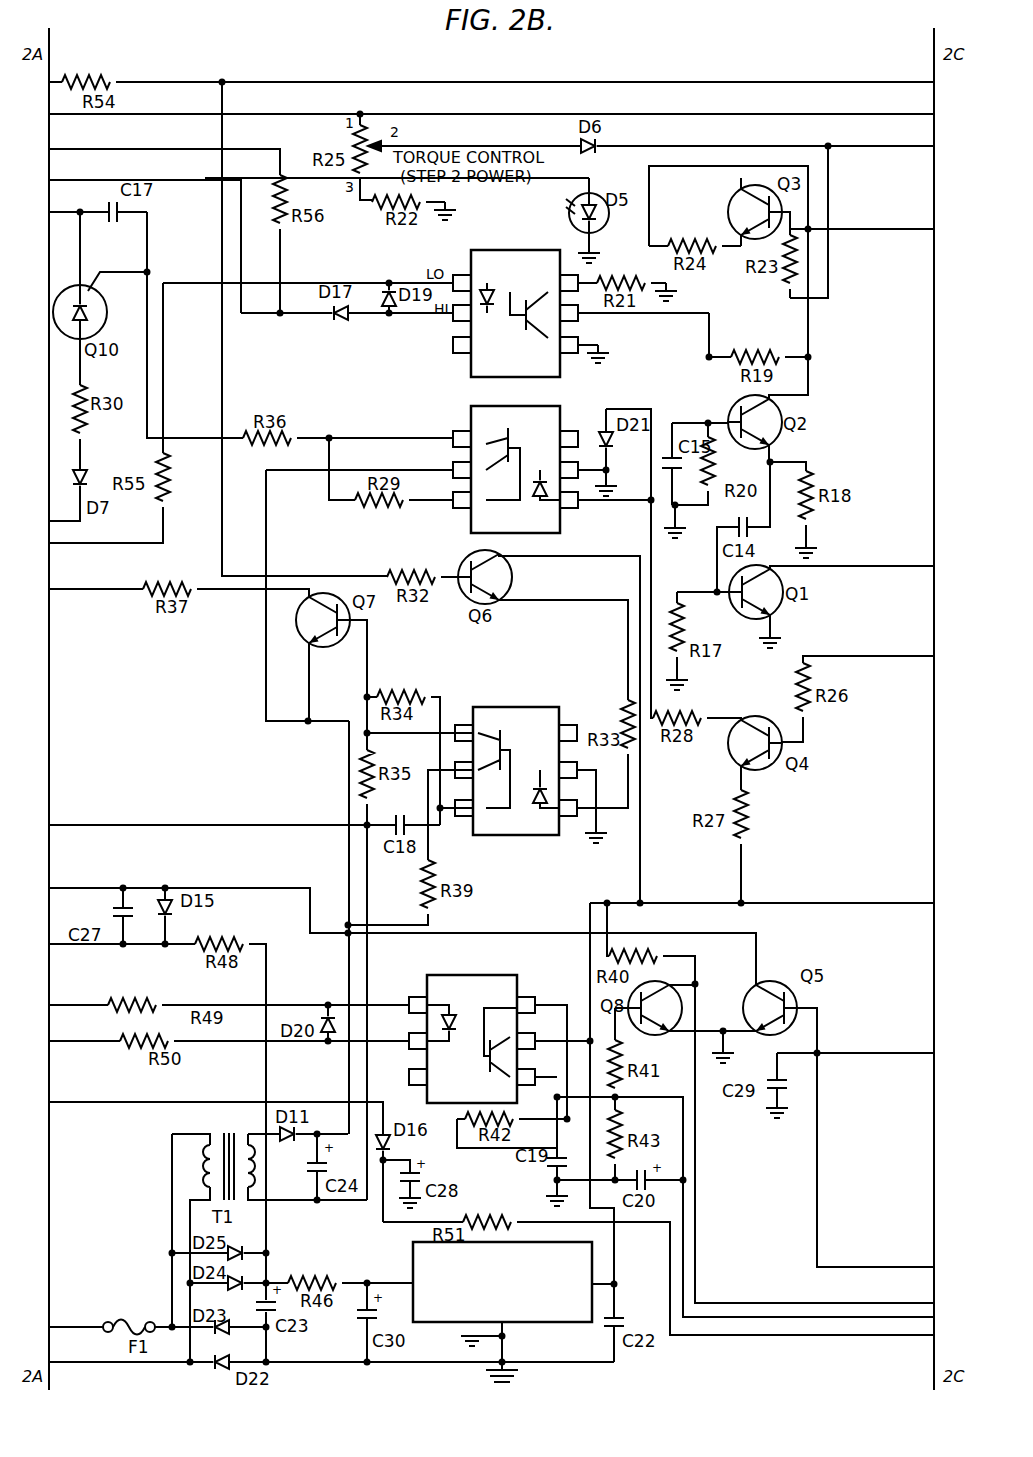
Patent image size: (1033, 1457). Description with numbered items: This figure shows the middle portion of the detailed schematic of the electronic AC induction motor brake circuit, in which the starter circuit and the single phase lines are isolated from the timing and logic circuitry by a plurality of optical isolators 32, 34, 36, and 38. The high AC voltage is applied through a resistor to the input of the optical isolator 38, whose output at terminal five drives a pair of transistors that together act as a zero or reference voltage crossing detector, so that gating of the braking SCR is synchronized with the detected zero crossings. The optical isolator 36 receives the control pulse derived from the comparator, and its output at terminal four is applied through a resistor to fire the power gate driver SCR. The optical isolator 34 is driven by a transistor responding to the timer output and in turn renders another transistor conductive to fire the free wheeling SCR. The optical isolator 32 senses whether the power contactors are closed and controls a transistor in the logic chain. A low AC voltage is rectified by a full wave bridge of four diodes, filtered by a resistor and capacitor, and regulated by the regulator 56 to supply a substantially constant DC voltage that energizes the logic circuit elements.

The optical isolator 38 is at (542, 250).
The optical isolator 36 is at (549, 412).
The optical isolator 34 is at (549, 708).
The optical isolator 32 is at (509, 975).
The regulator 56 is at (560, 1322).